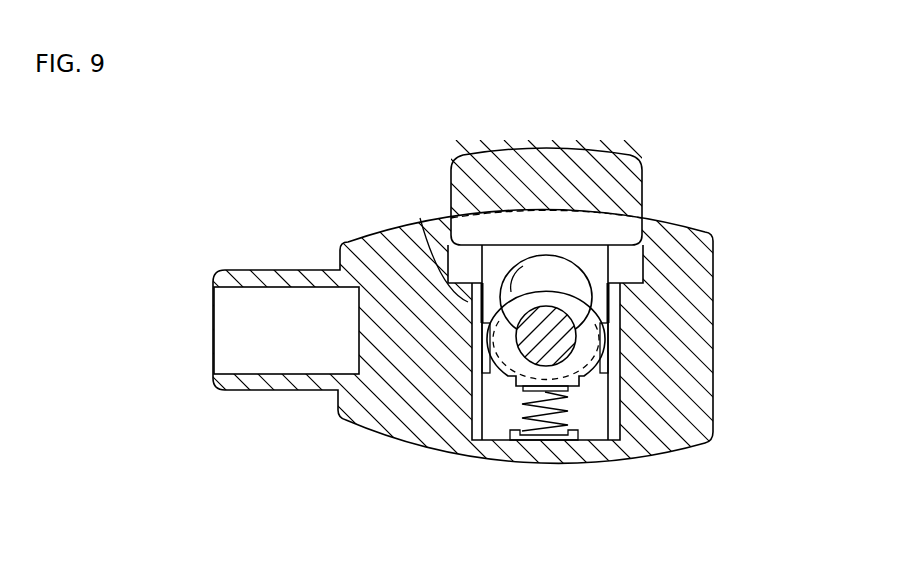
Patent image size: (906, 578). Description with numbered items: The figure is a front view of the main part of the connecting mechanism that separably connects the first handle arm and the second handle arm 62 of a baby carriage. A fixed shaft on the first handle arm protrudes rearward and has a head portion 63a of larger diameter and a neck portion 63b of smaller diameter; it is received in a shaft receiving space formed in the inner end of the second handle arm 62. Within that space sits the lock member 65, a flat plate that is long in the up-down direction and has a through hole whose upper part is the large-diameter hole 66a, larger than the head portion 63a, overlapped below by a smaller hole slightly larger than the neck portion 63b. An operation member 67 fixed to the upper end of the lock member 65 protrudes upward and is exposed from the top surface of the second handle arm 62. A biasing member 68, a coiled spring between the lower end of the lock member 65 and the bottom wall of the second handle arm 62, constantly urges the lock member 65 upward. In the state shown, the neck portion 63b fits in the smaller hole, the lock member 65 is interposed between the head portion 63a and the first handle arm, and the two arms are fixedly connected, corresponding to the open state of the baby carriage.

The second handle arm 62 is at (268, 278).
The head portion 63a is at (574, 298).
The neck portion 63b is at (573, 357).
The lock member 65 is at (597, 262).
The large-diameter hole 66a is at (420, 218).
The operation member 67 is at (598, 167).
The biasing member 68 is at (522, 397).